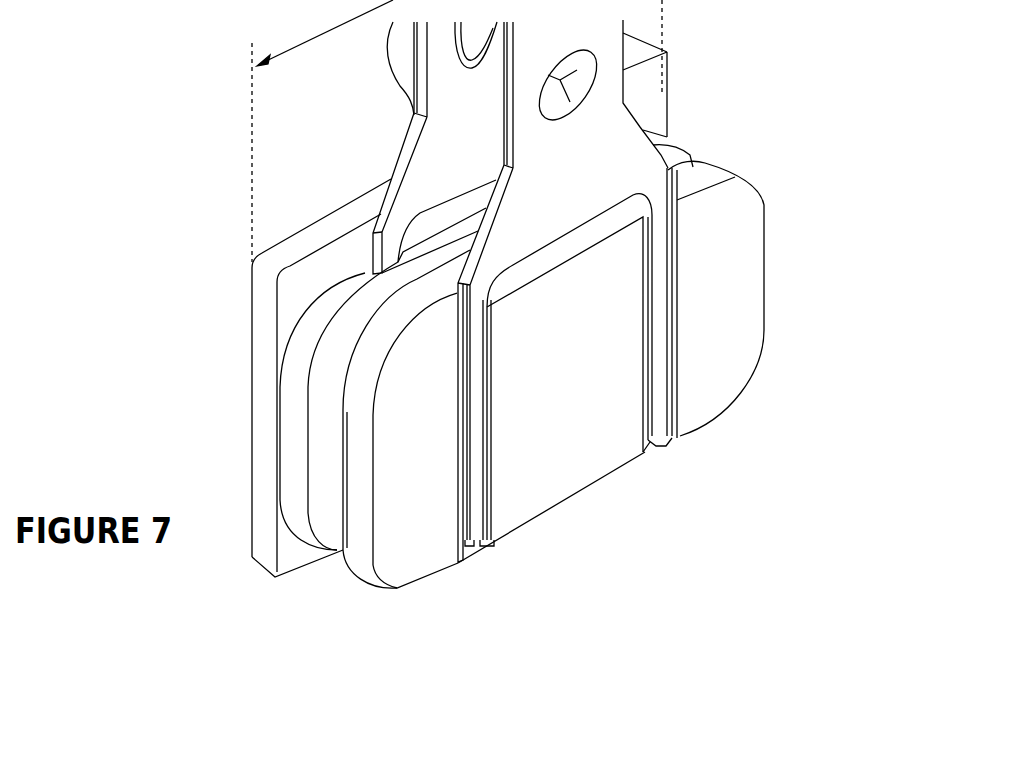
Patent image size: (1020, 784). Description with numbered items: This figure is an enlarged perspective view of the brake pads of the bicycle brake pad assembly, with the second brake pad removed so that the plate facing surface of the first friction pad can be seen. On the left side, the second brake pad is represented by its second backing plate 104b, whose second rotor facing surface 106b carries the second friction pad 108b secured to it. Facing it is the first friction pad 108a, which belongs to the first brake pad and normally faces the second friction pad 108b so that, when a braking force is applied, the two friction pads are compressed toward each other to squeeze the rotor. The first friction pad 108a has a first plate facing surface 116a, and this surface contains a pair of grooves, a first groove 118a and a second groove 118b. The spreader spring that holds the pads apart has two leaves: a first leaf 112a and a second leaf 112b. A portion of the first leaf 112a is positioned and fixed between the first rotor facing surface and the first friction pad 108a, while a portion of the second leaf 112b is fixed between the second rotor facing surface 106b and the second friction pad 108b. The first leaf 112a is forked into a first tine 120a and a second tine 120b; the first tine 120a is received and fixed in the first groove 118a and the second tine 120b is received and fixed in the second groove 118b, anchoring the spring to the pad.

The second backing plate 104b is at (262, 345).
The second rotor facing surface 106b is at (293, 278).
The second friction pad 108b is at (297, 372).
The first friction pad 108a is at (704, 243).
The first leaf 112a is at (602, 118).
The second leaf 112b is at (432, 168).
The first plate facing surface 116a is at (560, 437).
The first groove 118a is at (477, 548).
The second groove 118b is at (660, 443).
The first tine 120a is at (470, 467).
The second tine 120b is at (657, 318).